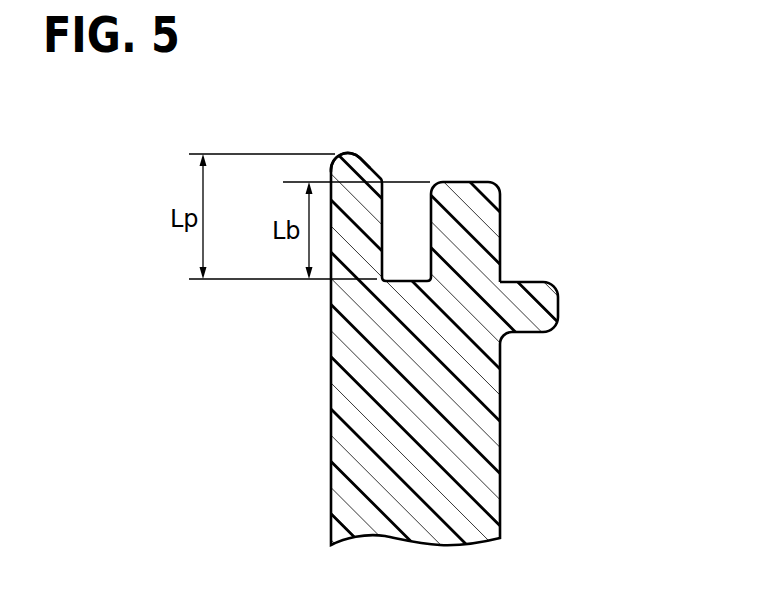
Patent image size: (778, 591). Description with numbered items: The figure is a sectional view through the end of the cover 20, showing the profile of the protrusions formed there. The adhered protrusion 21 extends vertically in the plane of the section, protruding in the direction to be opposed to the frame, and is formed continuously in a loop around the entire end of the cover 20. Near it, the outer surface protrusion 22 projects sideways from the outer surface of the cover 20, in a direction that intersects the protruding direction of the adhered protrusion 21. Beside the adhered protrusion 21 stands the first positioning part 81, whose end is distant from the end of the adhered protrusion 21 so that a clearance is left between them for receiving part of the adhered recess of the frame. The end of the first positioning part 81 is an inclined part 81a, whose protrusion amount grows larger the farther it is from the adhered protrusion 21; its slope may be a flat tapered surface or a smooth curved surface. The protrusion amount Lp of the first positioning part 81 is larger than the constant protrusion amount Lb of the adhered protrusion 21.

The cover 20 is at (457, 470).
The adhered protrusion 21 is at (483, 204).
The outer surface protrusion 22 is at (530, 307).
The first positioning part 81 is at (364, 176).
The inclined part 81a is at (362, 153).